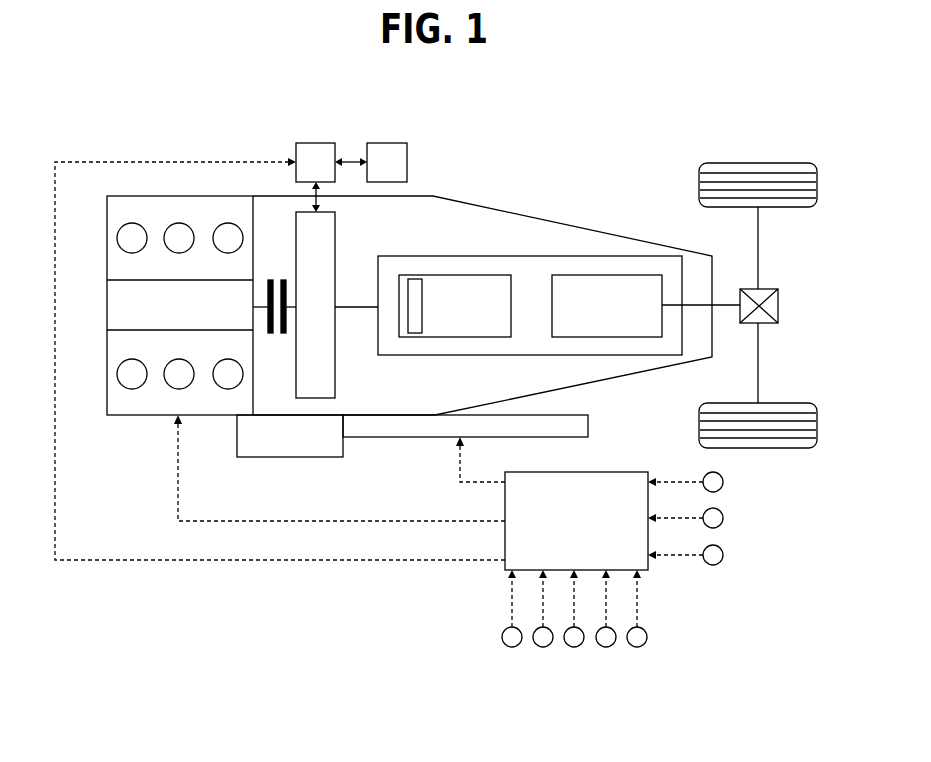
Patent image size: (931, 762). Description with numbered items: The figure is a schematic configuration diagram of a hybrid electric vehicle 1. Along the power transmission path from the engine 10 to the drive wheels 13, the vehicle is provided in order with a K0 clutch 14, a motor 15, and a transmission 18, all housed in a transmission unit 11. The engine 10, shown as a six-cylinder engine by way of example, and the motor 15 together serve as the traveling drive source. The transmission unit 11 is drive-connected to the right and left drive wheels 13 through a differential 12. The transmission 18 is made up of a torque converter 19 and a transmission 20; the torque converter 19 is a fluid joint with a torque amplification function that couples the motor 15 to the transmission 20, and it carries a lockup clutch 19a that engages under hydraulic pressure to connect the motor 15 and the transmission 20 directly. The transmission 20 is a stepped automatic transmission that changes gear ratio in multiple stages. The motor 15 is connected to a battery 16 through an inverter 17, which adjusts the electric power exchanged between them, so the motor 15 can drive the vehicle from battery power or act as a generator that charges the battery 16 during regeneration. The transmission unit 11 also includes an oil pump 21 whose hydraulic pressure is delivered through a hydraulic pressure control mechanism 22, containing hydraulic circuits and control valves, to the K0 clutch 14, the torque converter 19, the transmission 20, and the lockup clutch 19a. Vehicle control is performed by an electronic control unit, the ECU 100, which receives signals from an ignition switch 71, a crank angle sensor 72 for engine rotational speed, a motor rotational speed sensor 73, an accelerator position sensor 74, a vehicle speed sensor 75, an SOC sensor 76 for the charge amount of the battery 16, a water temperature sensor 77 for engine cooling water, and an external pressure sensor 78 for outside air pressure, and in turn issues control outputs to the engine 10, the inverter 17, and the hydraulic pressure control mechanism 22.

The hybrid electric vehicle 1 is at (536, 179).
The engine 10 is at (213, 416).
The transmission unit 11 is at (660, 370).
The differential 12 is at (762, 288).
The drive wheels 13 is at (800, 208).
The K0 clutch 14 is at (282, 278).
The motor 15 is at (335, 236).
The battery 16 is at (407, 162).
The inverter 17 is at (292, 170).
The transmission 18 is at (511, 256).
The torque converter 19 is at (449, 274).
The lockup clutch 19a is at (415, 278).
The transmission 20 is at (554, 338).
The oil pump 21 is at (306, 458).
The hydraulic pressure control mechanism 22 is at (396, 438).
The ignition switch 71 is at (723, 482).
The crank angle sensor 72 is at (723, 518).
The motor rotational speed sensor 73 is at (723, 555).
The accelerator position sensor 74 is at (637, 647).
The vehicle speed sensor 75 is at (606, 647).
The SOC sensor 76 is at (574, 647).
The water temperature sensor 77 is at (543, 647).
The external pressure sensor 78 is at (512, 647).
The electronic control unit (ECU) 100 is at (649, 471).